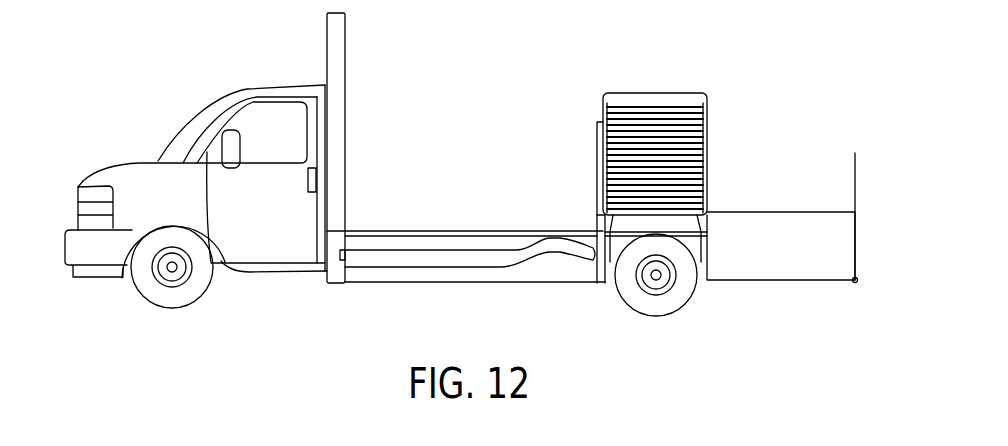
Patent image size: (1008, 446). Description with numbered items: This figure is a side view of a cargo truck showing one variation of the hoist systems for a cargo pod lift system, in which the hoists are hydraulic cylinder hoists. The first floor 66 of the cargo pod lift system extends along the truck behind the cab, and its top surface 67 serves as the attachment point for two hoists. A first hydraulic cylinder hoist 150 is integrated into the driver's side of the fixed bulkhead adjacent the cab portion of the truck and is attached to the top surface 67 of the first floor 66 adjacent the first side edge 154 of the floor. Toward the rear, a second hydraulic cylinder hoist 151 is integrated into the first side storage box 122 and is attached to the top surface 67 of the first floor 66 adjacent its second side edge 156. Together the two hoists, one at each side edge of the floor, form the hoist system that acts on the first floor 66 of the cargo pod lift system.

The first floor 66 is at (465, 284).
The top surface 67 is at (538, 283).
The first side storage box 122 is at (652, 115).
The first hydraulic cylinder hoist 150 is at (337, 207).
The second hydraulic cylinder hoist 151 is at (600, 162).
The first side edge 154 is at (343, 284).
The second side edge 156 is at (607, 284).